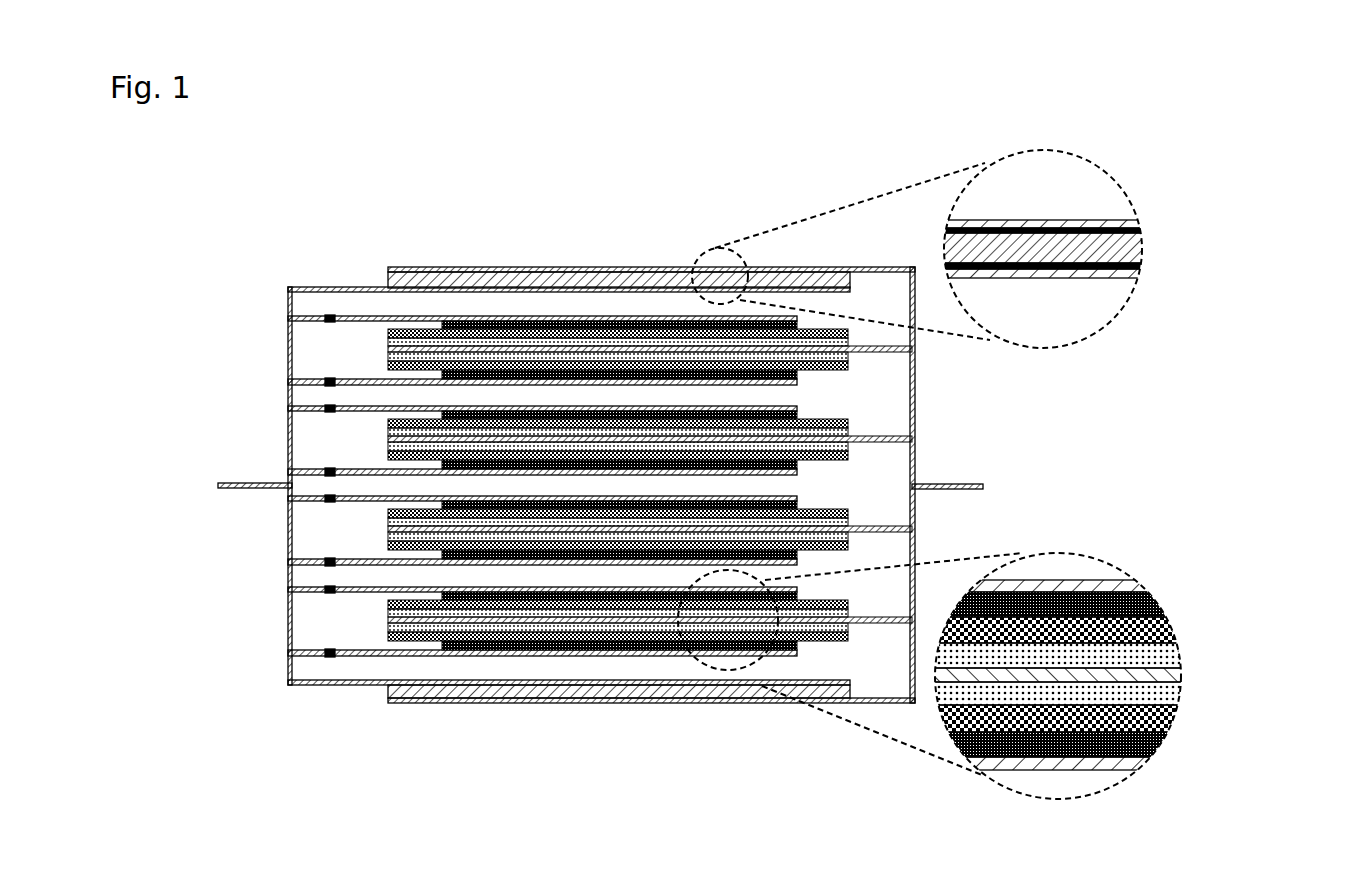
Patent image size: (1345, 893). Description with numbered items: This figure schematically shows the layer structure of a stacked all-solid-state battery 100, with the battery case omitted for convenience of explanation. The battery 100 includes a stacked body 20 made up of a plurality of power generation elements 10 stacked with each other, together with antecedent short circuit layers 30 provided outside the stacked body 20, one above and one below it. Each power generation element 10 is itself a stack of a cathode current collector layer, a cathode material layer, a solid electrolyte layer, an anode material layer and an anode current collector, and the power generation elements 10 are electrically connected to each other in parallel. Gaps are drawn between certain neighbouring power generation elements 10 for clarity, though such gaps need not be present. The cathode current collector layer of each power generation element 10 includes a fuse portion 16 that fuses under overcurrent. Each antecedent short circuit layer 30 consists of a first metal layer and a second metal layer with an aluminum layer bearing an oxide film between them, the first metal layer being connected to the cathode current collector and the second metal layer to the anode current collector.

The stacked all-solid-state battery 100 is at (647, 153).
The stacked body 20 is at (118, 313).
The power generation element 10 is at (362, 341).
The fuse portion 16 is at (328, 318).
The antecedent short circuit layer 30 is at (373, 270).